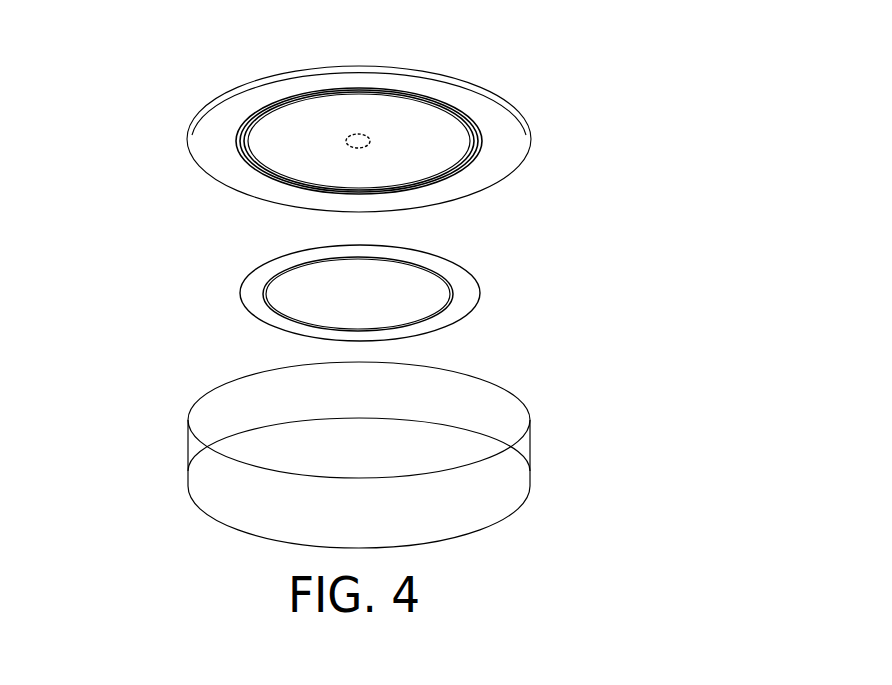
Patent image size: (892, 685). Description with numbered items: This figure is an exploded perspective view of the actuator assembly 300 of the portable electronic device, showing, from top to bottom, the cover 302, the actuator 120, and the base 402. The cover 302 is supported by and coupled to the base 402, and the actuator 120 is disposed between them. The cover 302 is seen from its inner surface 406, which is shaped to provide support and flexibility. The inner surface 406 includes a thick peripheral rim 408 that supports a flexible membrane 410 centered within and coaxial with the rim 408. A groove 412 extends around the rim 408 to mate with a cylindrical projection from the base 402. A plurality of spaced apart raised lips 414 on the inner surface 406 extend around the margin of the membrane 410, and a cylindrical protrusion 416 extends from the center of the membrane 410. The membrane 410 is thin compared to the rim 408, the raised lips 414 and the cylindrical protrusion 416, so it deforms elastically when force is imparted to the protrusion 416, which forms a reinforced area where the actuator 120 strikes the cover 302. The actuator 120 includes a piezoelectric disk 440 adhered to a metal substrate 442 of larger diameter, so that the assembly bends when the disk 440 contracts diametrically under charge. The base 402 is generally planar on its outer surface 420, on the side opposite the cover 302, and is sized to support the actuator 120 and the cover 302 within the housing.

The actuator assembly 300 is at (183, 554).
The cover 302 is at (505, 102).
The inner surface 406 is at (499, 152).
The peripheral rim 408 is at (322, 77).
The flexible membrane 410 is at (417, 122).
The groove 412 is at (229, 139).
The raised lips 414 is at (245, 158).
The cylindrical protrusion 416 is at (359, 139).
The actuator 120 is at (463, 270).
The piezoelectric disk 440 is at (300, 277).
The metal substrate 442 is at (251, 291).
The base 402 is at (502, 395).
The outer surface 420 is at (495, 498).